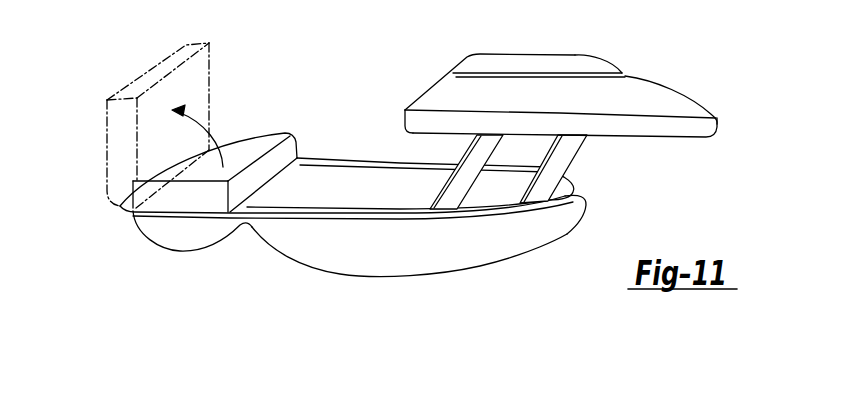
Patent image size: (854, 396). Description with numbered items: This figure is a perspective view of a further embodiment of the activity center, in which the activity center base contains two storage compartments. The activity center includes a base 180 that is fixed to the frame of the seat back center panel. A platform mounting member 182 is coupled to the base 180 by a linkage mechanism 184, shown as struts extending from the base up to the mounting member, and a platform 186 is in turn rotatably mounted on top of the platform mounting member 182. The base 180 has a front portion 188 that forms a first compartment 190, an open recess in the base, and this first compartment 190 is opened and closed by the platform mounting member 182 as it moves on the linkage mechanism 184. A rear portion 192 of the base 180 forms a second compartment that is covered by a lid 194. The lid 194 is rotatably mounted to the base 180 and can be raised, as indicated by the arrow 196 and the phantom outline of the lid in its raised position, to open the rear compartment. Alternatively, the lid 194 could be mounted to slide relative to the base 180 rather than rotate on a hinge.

The base 180 is at (330, 278).
The platform mounting member 182 is at (696, 98).
The linkage mechanism 184 is at (585, 167).
The platform 186 is at (563, 63).
The front portion 188 is at (443, 240).
The first compartment 190 is at (373, 182).
The rear portion 192 is at (182, 233).
The lid 194 is at (148, 71).
The arrow 196 is at (208, 124).